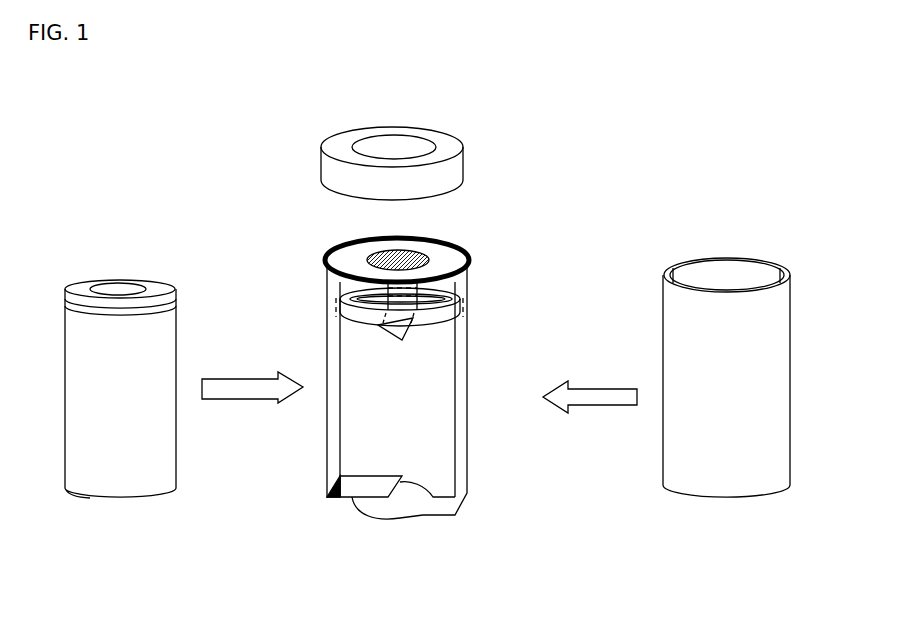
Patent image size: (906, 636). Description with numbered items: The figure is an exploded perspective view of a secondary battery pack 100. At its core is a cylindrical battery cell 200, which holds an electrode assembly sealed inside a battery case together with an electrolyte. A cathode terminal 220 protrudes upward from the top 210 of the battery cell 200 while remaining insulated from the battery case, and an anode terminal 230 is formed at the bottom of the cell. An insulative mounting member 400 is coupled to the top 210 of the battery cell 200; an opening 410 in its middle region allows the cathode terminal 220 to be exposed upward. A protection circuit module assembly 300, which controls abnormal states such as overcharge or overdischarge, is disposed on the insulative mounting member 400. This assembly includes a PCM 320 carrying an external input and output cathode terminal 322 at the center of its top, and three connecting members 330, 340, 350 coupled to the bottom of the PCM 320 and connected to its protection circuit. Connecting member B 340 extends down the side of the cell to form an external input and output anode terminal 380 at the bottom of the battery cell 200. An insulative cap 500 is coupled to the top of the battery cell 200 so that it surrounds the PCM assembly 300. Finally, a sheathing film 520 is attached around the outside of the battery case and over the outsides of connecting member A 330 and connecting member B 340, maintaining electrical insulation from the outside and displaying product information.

The secondary battery pack 100 is at (284, 161).
The cylindrical battery cell 200 is at (132, 369).
The top of the battery cell 210 is at (143, 298).
The cathode terminal 220 is at (117, 290).
The anode terminal 230 is at (117, 500).
The protection circuit module assembly 300 is at (400, 392).
The PCM 320 is at (337, 248).
The external input and output cathode terminal 322 is at (415, 247).
The connecting member A 330 is at (334, 422).
The connecting member B 340 is at (470, 467).
The connecting member 350 is at (402, 338).
The external input and output anode terminal 380 is at (390, 508).
The insulative mounting member 400 is at (442, 315).
The opening 410 is at (443, 293).
The insulative cap 500 is at (466, 172).
The sheathing film 520 is at (730, 250).